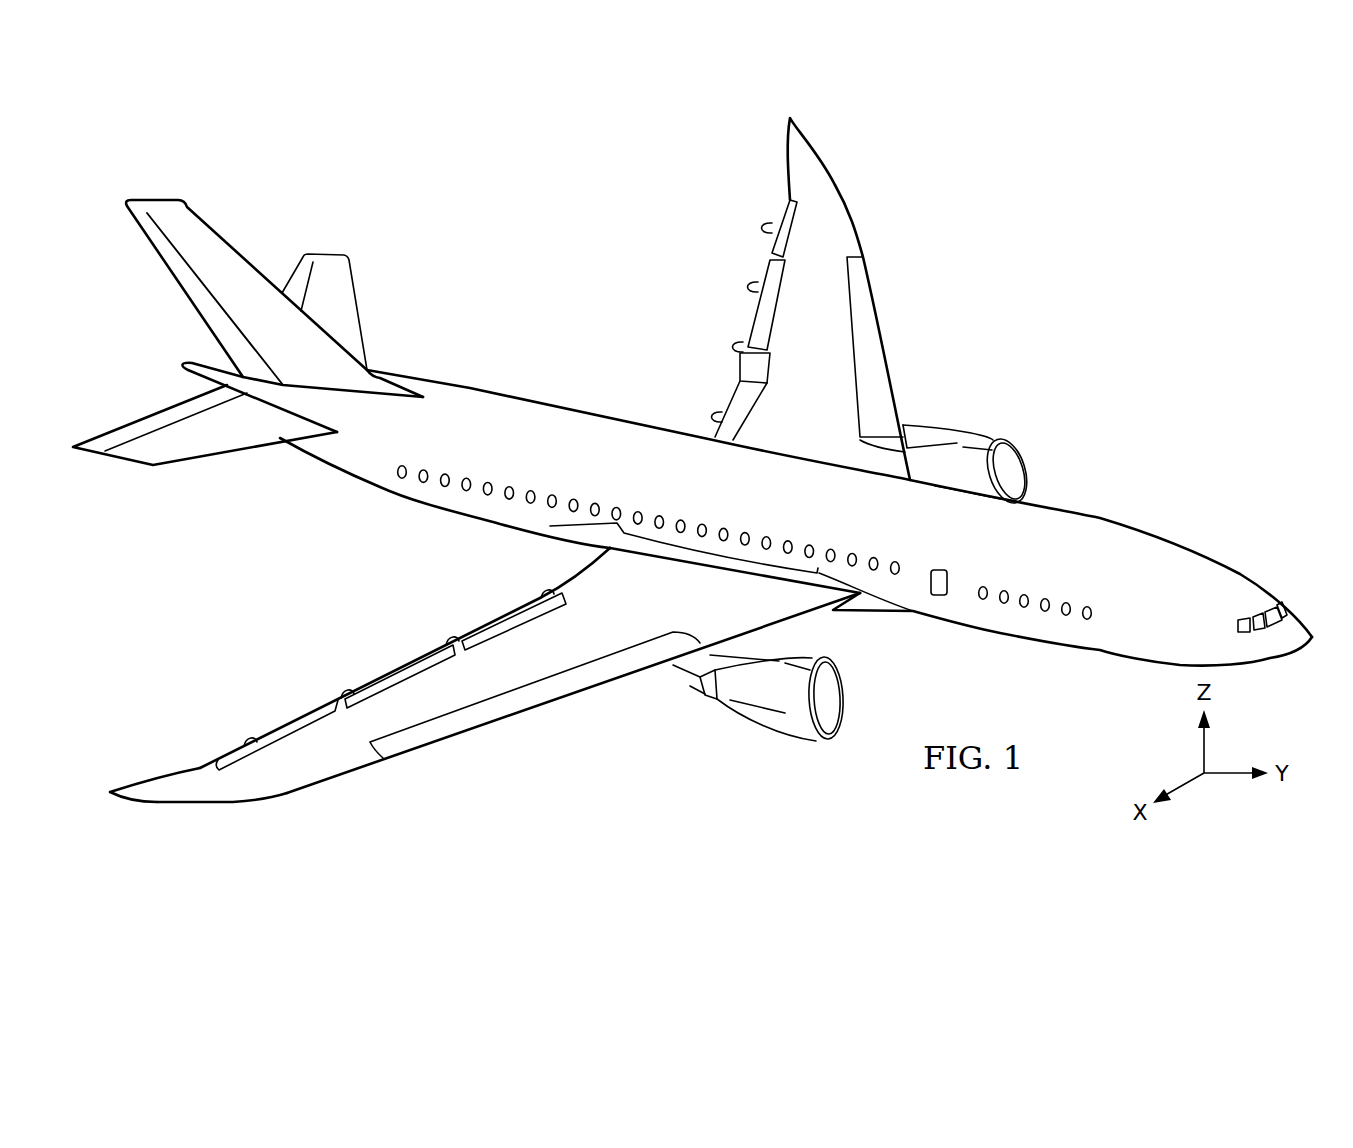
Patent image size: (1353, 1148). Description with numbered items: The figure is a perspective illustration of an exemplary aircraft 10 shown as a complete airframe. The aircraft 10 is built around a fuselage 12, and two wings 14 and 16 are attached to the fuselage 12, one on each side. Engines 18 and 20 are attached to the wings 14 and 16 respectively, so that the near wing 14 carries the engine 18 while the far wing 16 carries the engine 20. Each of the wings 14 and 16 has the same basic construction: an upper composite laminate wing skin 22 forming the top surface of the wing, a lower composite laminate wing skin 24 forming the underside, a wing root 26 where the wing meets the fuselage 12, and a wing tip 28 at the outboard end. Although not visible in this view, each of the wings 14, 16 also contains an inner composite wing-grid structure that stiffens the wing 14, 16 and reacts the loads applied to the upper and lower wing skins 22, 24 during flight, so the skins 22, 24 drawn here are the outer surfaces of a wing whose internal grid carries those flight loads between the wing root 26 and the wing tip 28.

The aircraft 10 is at (1027, 344).
The fuselage 12 is at (1147, 530).
The wing 14 is at (612, 772).
The wing 16 is at (942, 258).
The engine 18 is at (758, 732).
The engine 20 is at (980, 433).
The upper composite laminate wing skin 22 is at (340, 763).
The lower composite laminate wing skin 24 is at (462, 733).
The wing root 26 is at (863, 595).
The wing tip 28 is at (153, 803).